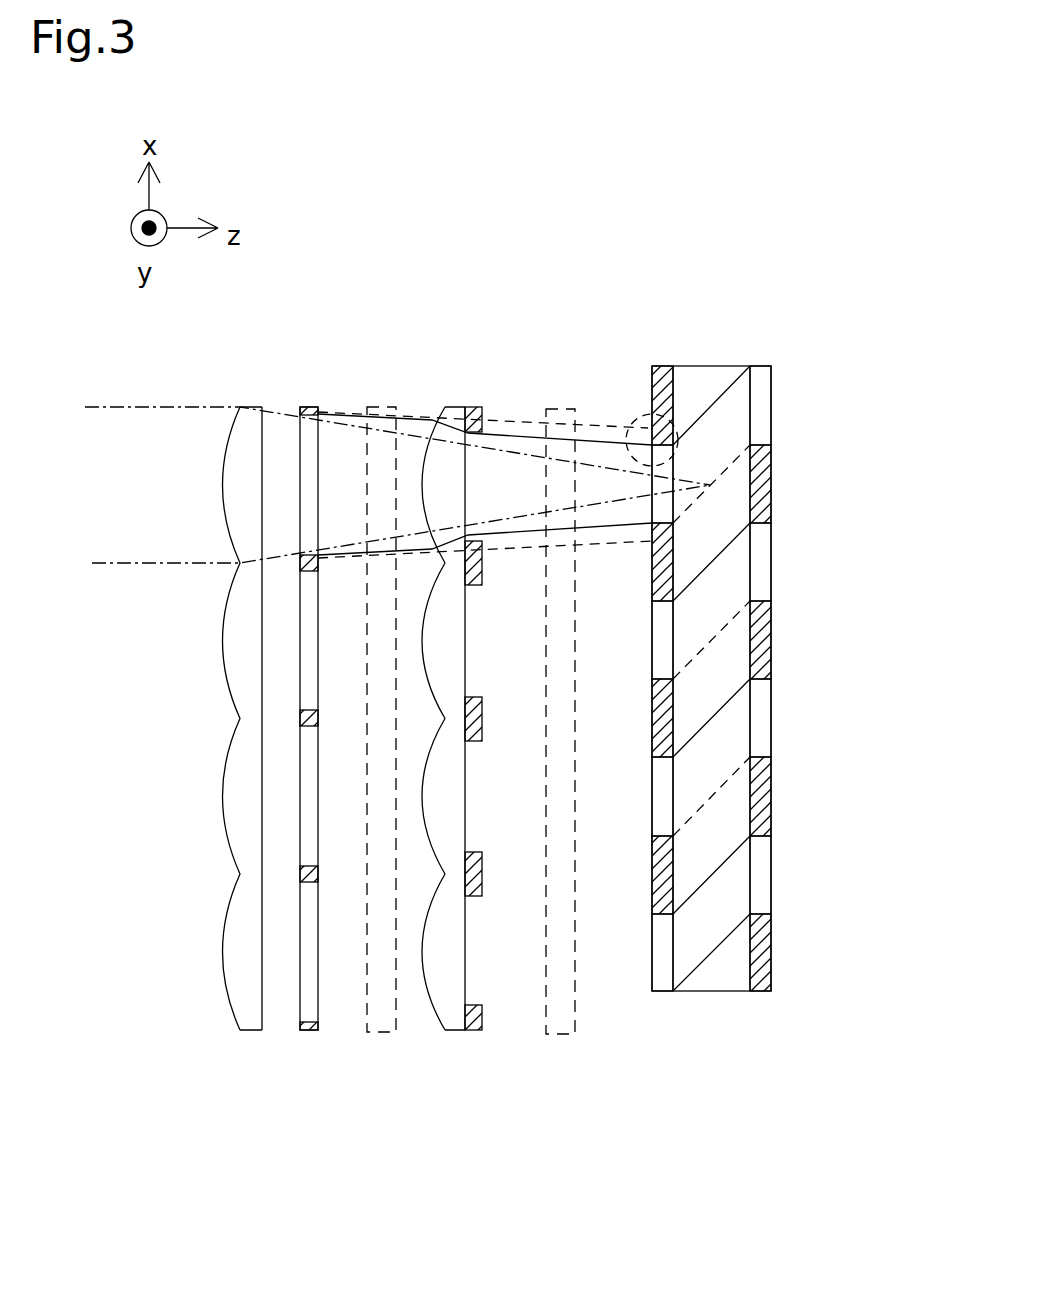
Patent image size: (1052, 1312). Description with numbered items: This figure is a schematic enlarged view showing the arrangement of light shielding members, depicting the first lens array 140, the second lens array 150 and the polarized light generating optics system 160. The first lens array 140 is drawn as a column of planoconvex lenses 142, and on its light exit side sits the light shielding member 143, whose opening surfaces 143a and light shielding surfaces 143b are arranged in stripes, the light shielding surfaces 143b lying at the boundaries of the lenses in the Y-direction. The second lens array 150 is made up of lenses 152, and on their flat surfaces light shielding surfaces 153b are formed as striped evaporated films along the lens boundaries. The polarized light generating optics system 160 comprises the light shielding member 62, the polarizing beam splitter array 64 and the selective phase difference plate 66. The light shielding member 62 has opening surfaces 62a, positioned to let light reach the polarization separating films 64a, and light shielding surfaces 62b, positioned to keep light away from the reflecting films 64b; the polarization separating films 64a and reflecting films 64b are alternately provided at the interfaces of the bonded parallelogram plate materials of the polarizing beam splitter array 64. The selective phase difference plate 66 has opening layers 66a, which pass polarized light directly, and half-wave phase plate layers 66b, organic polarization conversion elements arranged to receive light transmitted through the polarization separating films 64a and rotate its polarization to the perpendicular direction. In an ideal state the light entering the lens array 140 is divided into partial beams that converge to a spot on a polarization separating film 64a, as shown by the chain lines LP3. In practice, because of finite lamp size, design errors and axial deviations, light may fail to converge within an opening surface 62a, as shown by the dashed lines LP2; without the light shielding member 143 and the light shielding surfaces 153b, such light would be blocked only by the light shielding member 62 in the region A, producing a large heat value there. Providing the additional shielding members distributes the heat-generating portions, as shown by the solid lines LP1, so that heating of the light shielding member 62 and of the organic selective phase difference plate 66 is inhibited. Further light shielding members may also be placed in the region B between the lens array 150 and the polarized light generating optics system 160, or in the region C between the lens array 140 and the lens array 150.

The first lens array 140 is at (261, 360).
The lens element of first lens array 142 is at (232, 998).
The light shielding member 143 is at (320, 360).
The opening surfaces 143a is at (298, 988).
The light shielding surfaces 143b is at (318, 867).
The second lens array 150 is at (451, 365).
The lenses 152 is at (452, 1022).
The light shielding surfaces 153b is at (483, 868).
The polarized light generating optics system 160 is at (721, 290).
The light shielding member 62 is at (663, 992).
The opening surfaces 62a is at (657, 968).
The light shielding surfaces 62b is at (653, 875).
The polarizing beam splitter array 64 is at (708, 993).
The polarization separating film 64a is at (713, 795).
The reflecting film 64b is at (712, 720).
The selective phase difference plate 66 is at (753, 992).
The opening layers 66a is at (760, 885).
The λ/2 phase plate layers 66b is at (760, 960).
The solid lines LP1 is at (530, 428).
The dashed lines LP2 is at (603, 423).
The chain lines LP3 is at (391, 524).
The region A is at (640, 410).
The region B is at (560, 1038).
The region C is at (377, 1035).